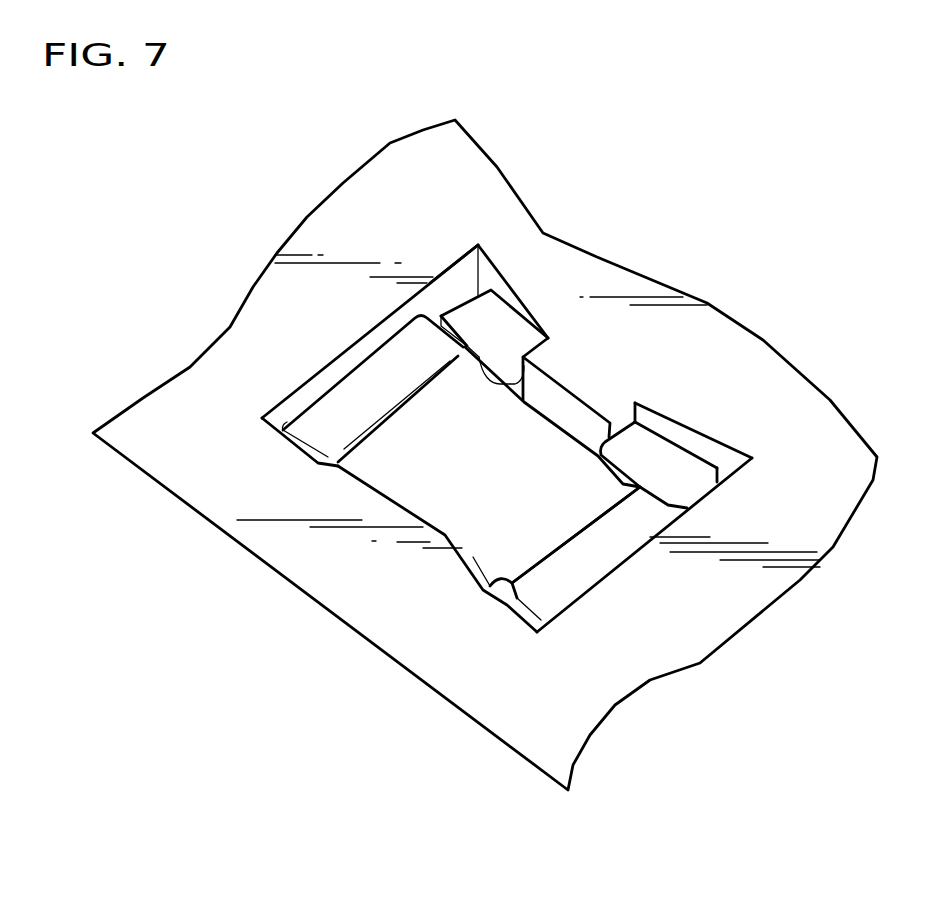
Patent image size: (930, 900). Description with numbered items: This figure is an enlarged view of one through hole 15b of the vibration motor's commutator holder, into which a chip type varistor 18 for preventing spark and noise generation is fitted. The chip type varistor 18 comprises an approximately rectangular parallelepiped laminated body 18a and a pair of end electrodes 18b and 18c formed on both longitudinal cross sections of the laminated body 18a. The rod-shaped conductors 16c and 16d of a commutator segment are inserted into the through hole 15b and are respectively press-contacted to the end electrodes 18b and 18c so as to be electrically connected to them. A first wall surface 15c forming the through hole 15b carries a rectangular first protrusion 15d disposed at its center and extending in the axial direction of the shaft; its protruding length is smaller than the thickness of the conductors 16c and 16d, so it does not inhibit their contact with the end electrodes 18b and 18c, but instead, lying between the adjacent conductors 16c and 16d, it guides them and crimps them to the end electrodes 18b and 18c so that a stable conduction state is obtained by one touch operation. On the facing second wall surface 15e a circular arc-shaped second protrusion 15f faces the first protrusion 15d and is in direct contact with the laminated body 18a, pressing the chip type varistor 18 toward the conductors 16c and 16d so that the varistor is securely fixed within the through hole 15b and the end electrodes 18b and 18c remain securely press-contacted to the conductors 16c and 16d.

The chip type varistor 18 is at (434, 414).
The laminated body 18a is at (387, 467).
The end electrode 18b is at (320, 417).
The end electrode 18c is at (592, 565).
The through hole 15b is at (457, 284).
The first wall surface 15c is at (695, 447).
The first protrusion 15d is at (586, 390).
The second wall surface 15e is at (516, 598).
The second protrusion 15f is at (388, 500).
The conductor 16c is at (686, 478).
The conductor 16d is at (498, 330).